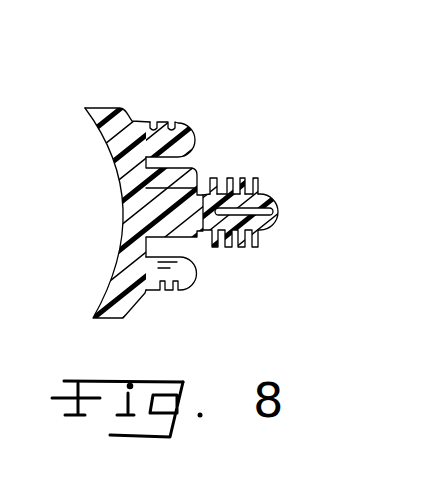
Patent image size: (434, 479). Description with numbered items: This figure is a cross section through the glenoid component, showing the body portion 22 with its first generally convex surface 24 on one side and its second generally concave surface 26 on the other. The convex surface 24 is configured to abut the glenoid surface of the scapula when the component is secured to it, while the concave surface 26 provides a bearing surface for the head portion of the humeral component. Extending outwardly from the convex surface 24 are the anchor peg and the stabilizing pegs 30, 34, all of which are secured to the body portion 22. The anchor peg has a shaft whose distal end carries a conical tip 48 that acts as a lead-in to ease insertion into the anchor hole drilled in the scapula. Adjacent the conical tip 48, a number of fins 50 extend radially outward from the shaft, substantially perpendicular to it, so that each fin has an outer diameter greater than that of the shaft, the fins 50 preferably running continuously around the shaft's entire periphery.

The body portion 22 is at (127, 108).
The first generally convex surface 24 is at (192, 168).
The second generally concave surface 26 is at (112, 162).
The stabilizing peg 30 is at (181, 123).
The stabilizing peg 34 is at (162, 290).
The conical tip 48 is at (190, 182).
The fins 50 is at (208, 181).